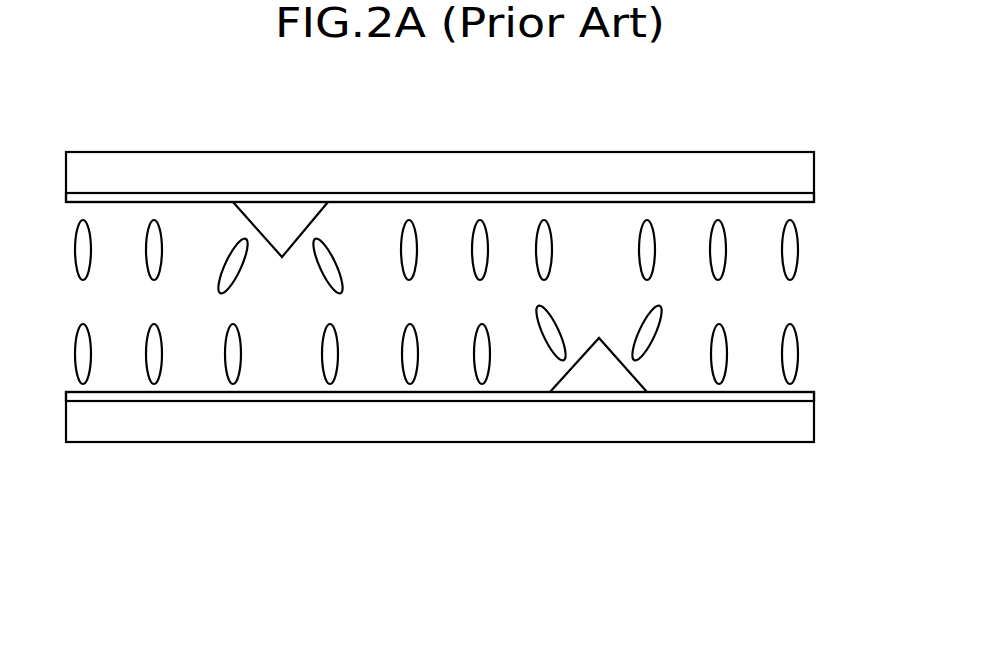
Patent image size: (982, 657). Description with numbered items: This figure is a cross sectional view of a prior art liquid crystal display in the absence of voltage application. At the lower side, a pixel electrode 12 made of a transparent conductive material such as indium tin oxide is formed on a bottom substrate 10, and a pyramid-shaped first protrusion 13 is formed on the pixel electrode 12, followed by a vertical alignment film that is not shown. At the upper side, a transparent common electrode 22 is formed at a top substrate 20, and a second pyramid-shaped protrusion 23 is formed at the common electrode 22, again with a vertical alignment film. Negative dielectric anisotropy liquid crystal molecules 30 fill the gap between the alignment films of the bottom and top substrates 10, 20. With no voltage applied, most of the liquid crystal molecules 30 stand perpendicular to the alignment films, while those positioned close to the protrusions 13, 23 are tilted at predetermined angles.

The bottom substrate 10 is at (806, 418).
The pixel electrode 12 is at (803, 397).
The first protrusion 13 is at (580, 377).
The top substrate 20 is at (805, 178).
The common electrode 22 is at (798, 198).
The second protrusion 23 is at (302, 217).
The liquid crystal molecules 30 is at (333, 353).